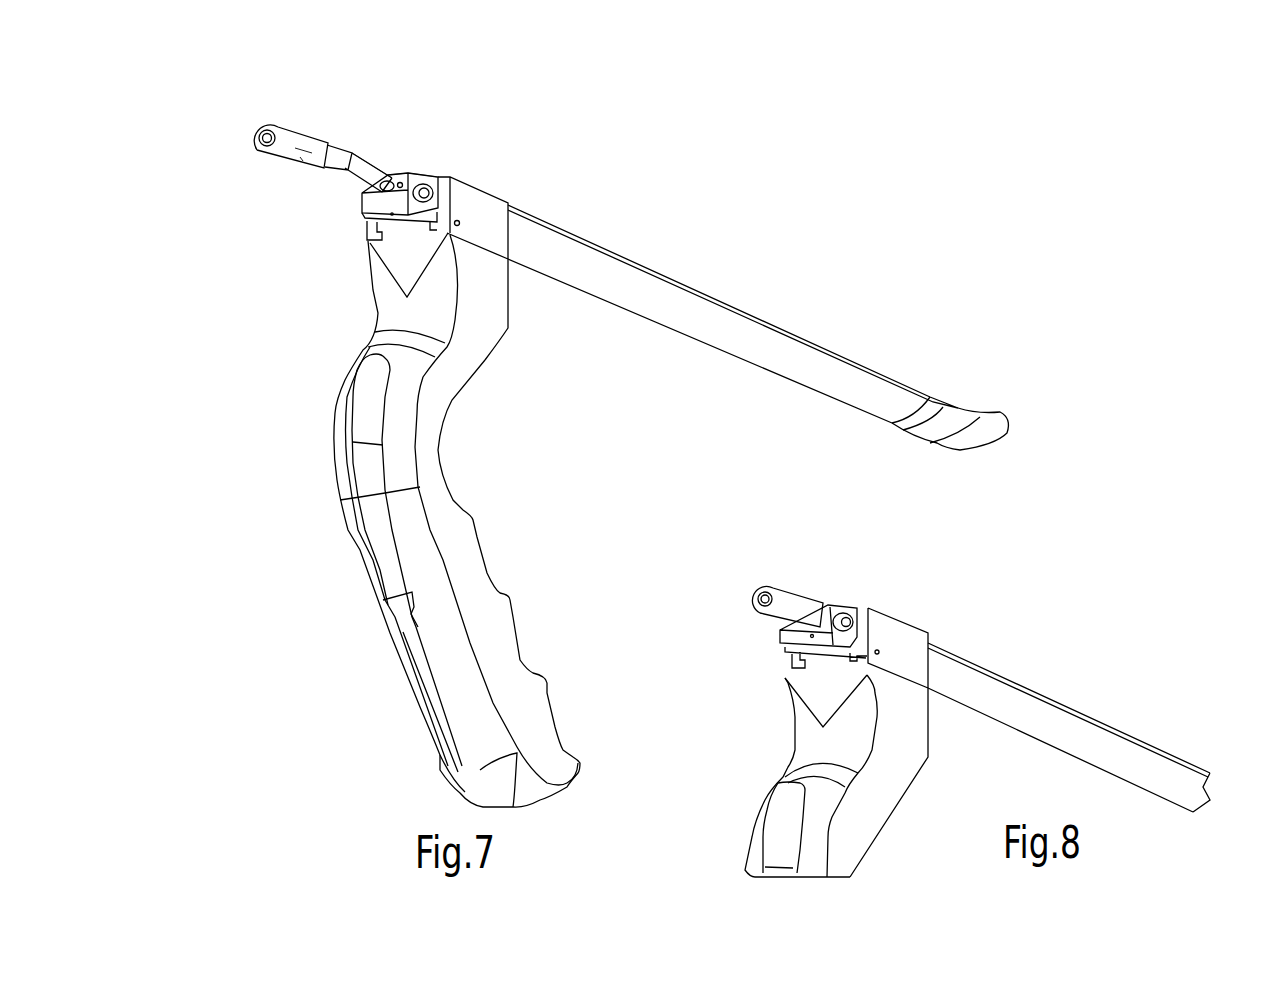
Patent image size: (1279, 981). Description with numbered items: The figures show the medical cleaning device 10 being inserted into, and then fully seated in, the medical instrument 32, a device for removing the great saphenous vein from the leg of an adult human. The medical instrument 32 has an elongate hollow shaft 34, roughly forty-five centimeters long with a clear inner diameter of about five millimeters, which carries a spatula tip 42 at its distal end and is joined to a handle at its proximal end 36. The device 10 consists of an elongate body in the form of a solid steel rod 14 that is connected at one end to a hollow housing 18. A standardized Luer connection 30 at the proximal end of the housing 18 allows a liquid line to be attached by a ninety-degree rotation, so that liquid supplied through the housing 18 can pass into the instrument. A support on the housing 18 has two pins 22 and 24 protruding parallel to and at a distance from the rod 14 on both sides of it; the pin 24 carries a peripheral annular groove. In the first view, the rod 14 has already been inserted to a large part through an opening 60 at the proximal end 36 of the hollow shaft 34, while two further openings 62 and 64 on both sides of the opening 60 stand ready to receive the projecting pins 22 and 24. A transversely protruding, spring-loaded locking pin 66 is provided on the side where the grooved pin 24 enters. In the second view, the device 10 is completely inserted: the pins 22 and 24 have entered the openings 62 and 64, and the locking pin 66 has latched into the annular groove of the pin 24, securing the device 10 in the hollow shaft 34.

In FIG. 7, the device 10 is at (337, 125).
In FIG. 7, the rod 14 is at (359, 190).
In FIG. 7, the housing 18 is at (310, 132).
In FIG. 8, the housing 18 is at (815, 600).
In FIG. 7, the pin 22 is at (310, 172).
In FIG. 7, the pin 24 is at (340, 168).
In FIG. 7, the Luer connection 30 is at (262, 132).
In FIG. 8, the Luer connection 30 is at (766, 590).
In FIG. 7, the medical instrument 32 is at (320, 612).
In FIG. 8, the medical instrument 32 is at (836, 742).
In FIG. 7, the hollow shaft 34 is at (817, 342).
In FIG. 8, the hollow shaft 34 is at (1083, 733).
In FIG. 7, the proximal end 36 is at (400, 170).
In FIG. 7, the spatula tip 42 is at (1000, 428).
In FIG. 7, the opening 60 is at (382, 180).
In FIG. 7, the opening 62 is at (357, 197).
In FIG. 8, the opening 62 is at (823, 636).
In FIG. 7, the opening 64 is at (418, 175).
In FIG. 7, the locking pin 66 is at (440, 191).
In FIG. 8, the locking pin 66 is at (848, 612).